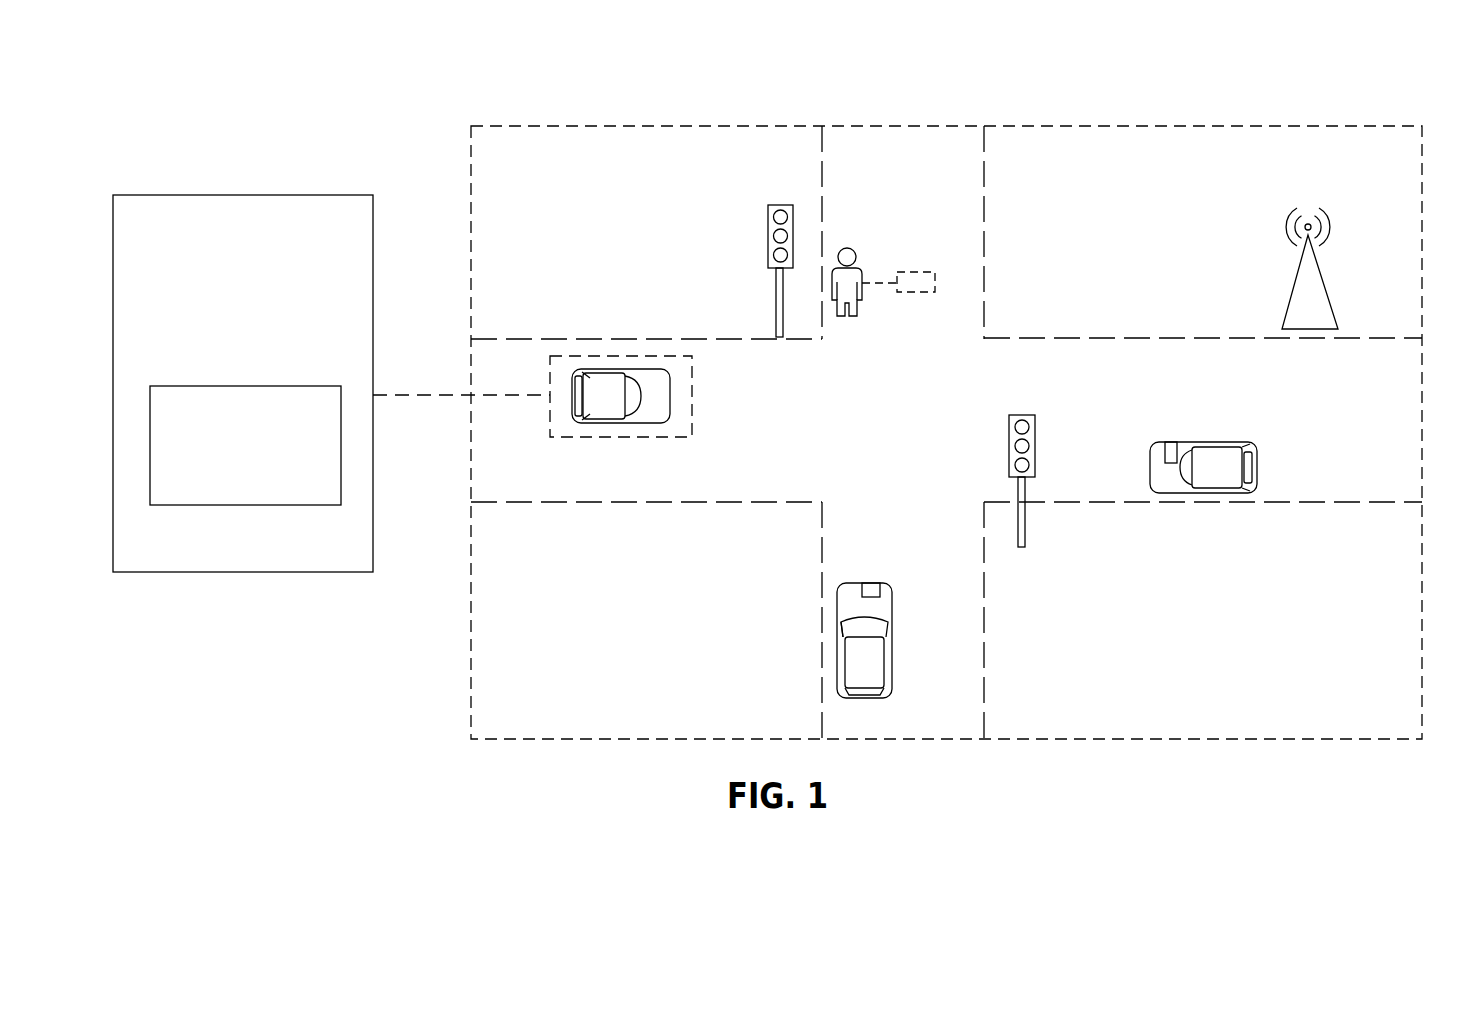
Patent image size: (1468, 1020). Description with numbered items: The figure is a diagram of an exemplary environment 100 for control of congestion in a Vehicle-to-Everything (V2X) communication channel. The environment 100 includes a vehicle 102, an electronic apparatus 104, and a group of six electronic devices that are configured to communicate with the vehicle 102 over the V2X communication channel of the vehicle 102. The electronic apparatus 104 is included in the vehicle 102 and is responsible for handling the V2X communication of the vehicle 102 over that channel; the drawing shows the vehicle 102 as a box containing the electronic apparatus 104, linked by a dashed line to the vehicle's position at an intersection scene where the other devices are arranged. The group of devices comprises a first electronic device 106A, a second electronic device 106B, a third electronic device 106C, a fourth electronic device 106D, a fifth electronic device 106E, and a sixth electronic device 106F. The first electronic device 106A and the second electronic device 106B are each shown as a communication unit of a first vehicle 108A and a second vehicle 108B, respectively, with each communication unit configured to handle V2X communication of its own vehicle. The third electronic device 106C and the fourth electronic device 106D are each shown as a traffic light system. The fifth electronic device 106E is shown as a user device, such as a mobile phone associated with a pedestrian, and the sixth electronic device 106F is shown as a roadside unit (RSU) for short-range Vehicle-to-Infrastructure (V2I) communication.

The exemplary environment 100 is at (174, 102).
The vehicle 102 is at (243, 383).
The electronic apparatus 104 is at (245, 445).
The first electronic device 106A is at (873, 587).
The second electronic device 106B is at (1173, 450).
The third electronic device 106C is at (1035, 455).
The fourth electronic device 106D is at (768, 248).
The fifth electronic device 106E is at (1325, 307).
The sixth electronic device 106F is at (915, 283).
The first vehicle 108A is at (877, 672).
The second vehicle 108B is at (1235, 462).